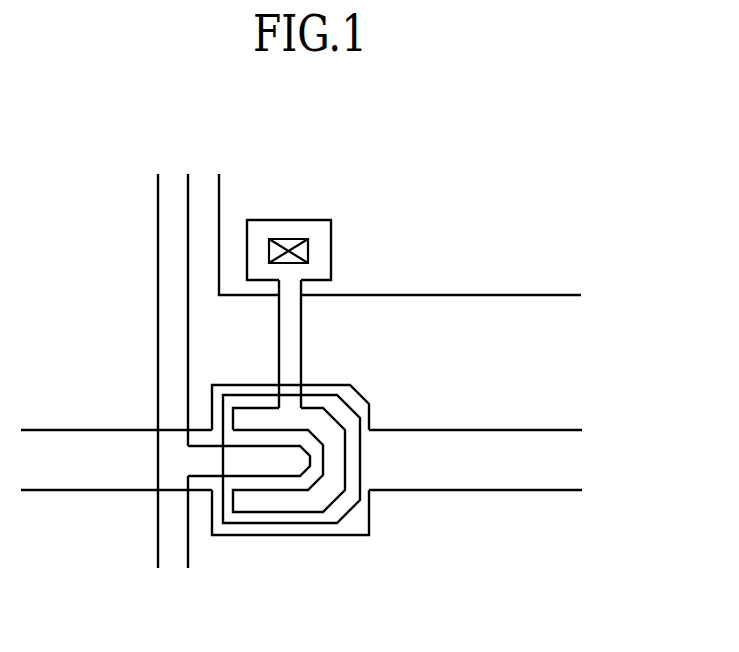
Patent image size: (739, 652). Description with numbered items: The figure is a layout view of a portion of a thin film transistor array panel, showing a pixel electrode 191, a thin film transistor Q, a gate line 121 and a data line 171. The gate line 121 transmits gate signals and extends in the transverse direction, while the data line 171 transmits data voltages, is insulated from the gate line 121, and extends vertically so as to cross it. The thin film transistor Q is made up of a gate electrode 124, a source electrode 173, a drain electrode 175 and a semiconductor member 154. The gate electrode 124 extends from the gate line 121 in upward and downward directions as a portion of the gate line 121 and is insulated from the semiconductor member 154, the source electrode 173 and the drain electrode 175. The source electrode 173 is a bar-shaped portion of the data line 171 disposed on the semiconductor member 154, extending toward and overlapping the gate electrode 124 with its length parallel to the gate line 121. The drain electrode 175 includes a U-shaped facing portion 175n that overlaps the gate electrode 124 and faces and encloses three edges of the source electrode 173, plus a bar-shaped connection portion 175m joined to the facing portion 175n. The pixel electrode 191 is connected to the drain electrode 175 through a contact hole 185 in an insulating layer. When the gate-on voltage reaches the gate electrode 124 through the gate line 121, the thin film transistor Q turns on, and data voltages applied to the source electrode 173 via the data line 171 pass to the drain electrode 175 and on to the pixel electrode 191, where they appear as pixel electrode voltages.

The gate line 121 is at (95, 430).
The gate electrode 124 is at (362, 398).
The semiconductor member 154 is at (343, 517).
The data line 171 is at (188, 350).
The source electrode 173 is at (287, 476).
The drain electrode 175 is at (370, 324).
The connection portion 175m is at (348, 272).
The facing portion 175n is at (313, 407).
The contact hole 185 is at (289, 239).
The pixel electrode 191 is at (540, 297).
The thin film transistor Q is at (339, 391).